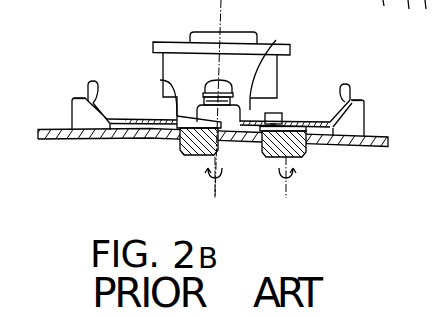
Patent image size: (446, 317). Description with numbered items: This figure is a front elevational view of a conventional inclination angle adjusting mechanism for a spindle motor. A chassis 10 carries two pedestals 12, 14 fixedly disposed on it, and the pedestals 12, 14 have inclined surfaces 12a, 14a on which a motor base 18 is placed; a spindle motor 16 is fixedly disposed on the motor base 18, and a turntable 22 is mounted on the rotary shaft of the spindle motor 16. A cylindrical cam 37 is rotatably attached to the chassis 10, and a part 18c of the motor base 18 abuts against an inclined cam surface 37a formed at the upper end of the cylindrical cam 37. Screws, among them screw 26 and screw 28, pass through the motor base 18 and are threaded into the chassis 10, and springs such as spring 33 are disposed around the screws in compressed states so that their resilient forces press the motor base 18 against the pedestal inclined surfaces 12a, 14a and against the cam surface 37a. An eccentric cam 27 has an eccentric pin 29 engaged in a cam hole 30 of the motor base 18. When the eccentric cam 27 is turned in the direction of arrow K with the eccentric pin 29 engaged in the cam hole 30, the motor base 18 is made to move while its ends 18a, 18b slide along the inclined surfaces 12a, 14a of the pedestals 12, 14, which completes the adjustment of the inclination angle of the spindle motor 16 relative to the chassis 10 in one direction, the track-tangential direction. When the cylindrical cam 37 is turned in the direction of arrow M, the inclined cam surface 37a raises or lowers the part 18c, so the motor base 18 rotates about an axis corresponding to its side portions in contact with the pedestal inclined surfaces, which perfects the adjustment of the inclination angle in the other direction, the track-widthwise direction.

The chassis 10 is at (390, 134).
The pedestal 12 is at (78, 112).
The inclined surface 12a is at (84, 96).
The pedestal 14 is at (355, 118).
The inclined surface 14a is at (352, 97).
The spindle motor 16 is at (279, 42).
The motor base 18 is at (137, 124).
The end of motor base 18a is at (95, 82).
The end of motor base 18b is at (346, 86).
The part of motor base 18c is at (234, 123).
The turntable 22 is at (272, 43).
The screw 26 is at (238, 22).
The eccentric cam 27 is at (266, 158).
The screw 28 is at (219, 91).
The eccentric pin 29 is at (282, 112).
The cam hole 30 is at (287, 119).
The spring 33 is at (196, 104).
The cylindrical cam 37 is at (177, 156).
The inclined cam surface 37a is at (160, 80).
The arrow M is at (202, 189).
The arrow K is at (296, 189).